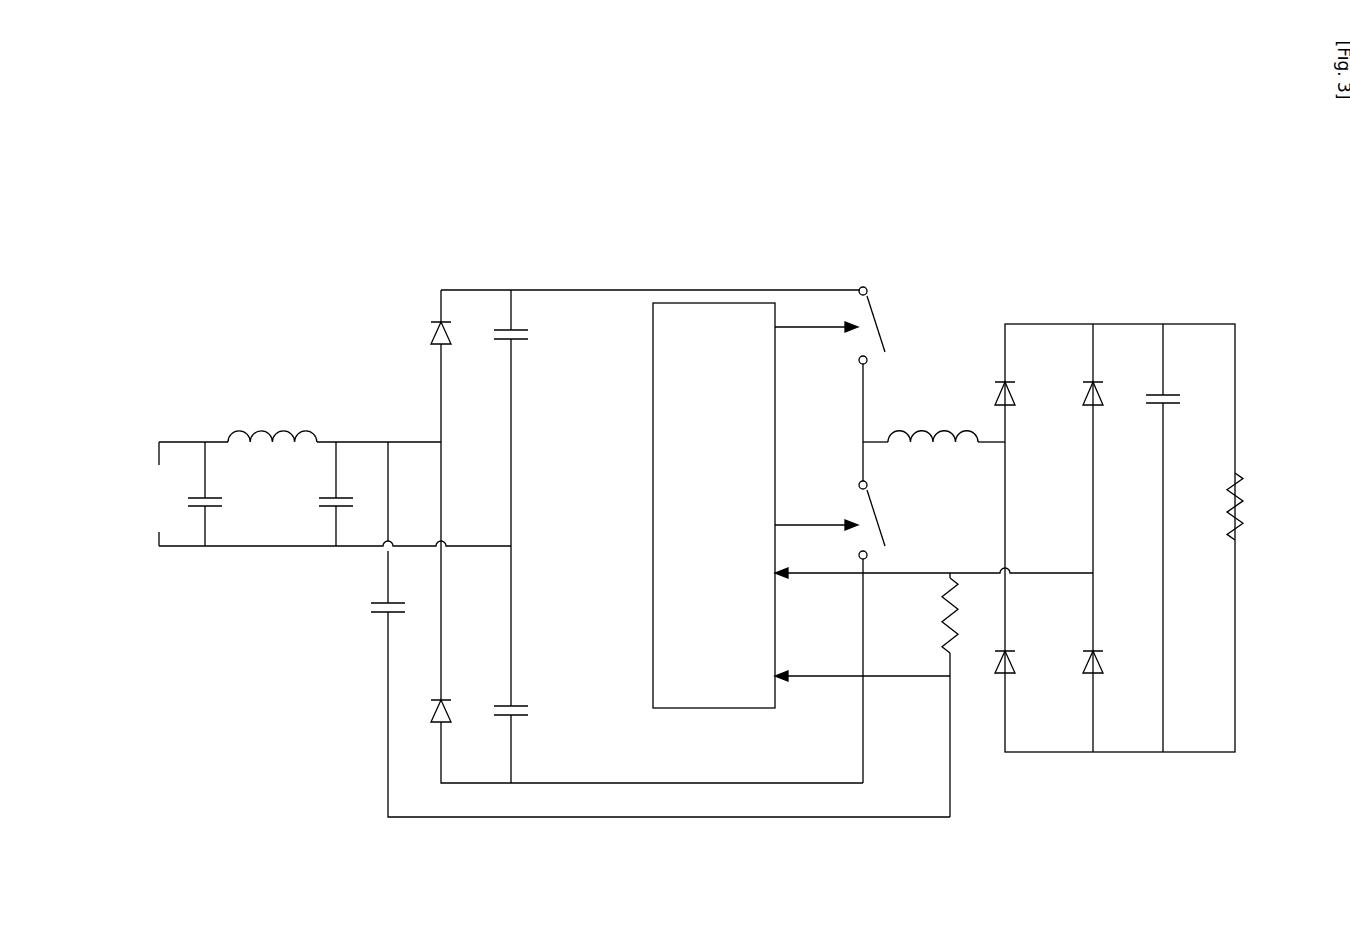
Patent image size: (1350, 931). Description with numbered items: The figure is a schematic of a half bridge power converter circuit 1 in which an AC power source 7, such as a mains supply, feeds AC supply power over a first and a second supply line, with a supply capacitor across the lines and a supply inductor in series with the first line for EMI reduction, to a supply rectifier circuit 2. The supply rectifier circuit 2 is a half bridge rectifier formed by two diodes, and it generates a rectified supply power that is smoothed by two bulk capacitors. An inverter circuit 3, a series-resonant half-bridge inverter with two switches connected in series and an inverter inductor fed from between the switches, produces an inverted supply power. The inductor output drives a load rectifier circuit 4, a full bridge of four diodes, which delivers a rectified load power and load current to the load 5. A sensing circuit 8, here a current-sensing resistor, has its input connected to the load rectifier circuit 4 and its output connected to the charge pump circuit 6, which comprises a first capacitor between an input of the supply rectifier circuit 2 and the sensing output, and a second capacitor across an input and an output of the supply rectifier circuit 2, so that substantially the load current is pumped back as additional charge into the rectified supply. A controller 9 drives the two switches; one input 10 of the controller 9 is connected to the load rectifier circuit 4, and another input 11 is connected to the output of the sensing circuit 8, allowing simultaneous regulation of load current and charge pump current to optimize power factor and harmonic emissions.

The power converter circuit 1 is at (400, 180).
The supply rectifier circuit 2 is at (400, 316).
The inverter circuit 3 is at (879, 259).
The load rectifier circuit 4 is at (1092, 297).
The load 5 is at (1258, 477).
The charge pump circuit 6 is at (366, 391).
The AC power source 7 is at (124, 513).
The sensing circuit 8 is at (966, 723).
The controller 9 is at (755, 505).
The input of the controller 10 is at (773, 573).
The input of the controller 11 is at (773, 678).